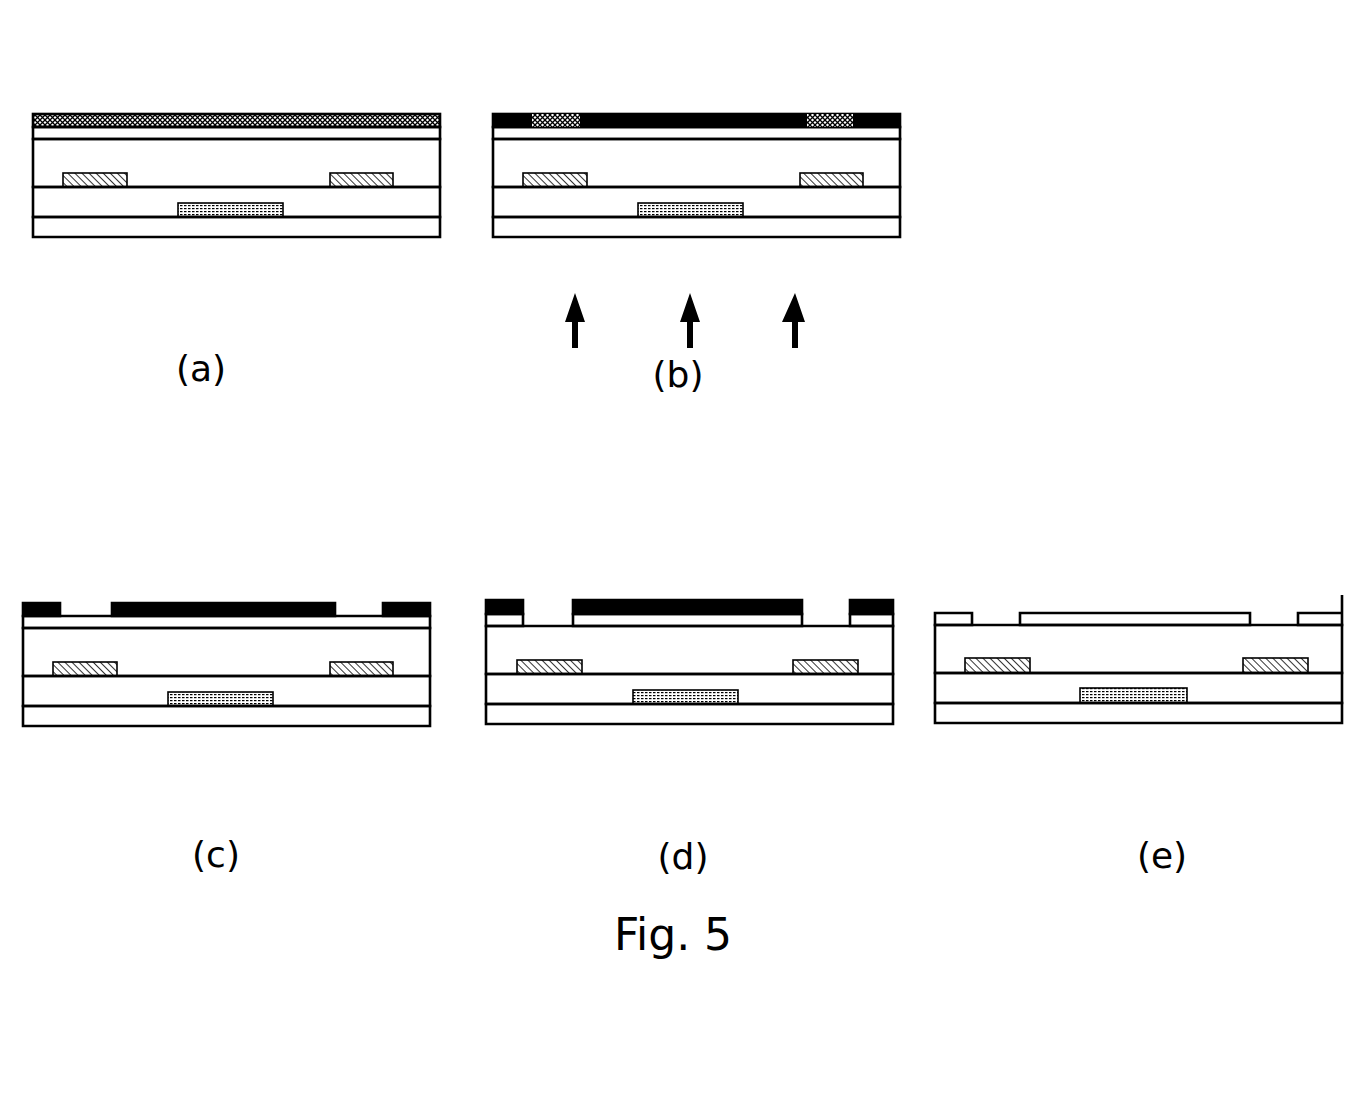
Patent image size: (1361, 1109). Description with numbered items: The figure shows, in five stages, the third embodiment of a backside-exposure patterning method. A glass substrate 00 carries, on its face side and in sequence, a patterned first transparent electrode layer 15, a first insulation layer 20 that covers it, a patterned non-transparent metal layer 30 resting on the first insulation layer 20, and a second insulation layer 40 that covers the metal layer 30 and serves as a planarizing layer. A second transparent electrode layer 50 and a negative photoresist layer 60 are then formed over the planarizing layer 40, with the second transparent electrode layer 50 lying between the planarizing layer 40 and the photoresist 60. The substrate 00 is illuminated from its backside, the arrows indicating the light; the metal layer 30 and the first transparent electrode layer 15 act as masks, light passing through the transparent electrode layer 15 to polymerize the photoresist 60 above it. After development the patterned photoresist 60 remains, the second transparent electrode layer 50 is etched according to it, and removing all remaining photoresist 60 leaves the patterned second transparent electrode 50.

The glass substrate 00 is at (391, 226).
The first transparent electrode layer 15 is at (230, 214).
The first insulation layer 20 is at (147, 207).
The metal layer 30 is at (74, 189).
The second insulation layer 40 is at (302, 152).
The second transparent electrode layer 50 is at (182, 132).
The negative photoresist layer 60 is at (107, 113).